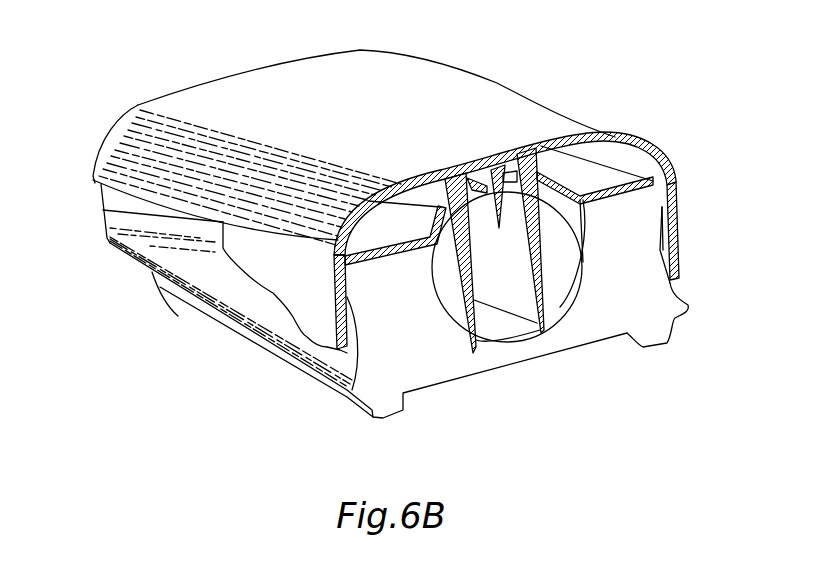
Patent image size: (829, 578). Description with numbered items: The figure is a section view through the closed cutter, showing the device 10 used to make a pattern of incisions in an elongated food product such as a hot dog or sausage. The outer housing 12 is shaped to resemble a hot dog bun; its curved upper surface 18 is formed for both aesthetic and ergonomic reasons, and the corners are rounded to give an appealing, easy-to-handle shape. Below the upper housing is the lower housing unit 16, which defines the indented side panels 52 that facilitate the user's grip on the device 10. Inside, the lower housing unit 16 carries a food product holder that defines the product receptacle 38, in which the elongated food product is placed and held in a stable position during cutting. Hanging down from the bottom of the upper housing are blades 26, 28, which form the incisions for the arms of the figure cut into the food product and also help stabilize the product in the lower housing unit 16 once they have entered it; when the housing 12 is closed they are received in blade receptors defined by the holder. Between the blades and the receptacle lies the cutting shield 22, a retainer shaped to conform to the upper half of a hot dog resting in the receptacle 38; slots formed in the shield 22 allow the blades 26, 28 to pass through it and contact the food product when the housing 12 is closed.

The device 10 is at (176, 62).
The housing 12 is at (430, 55).
The lower housing unit 16 is at (183, 311).
The upper surface 18 is at (503, 100).
The cutting shield 22 is at (610, 175).
The blade 26 is at (456, 298).
The blade 28 is at (512, 287).
The product receptacle 38 is at (562, 275).
The indented side panels 52 is at (167, 253).